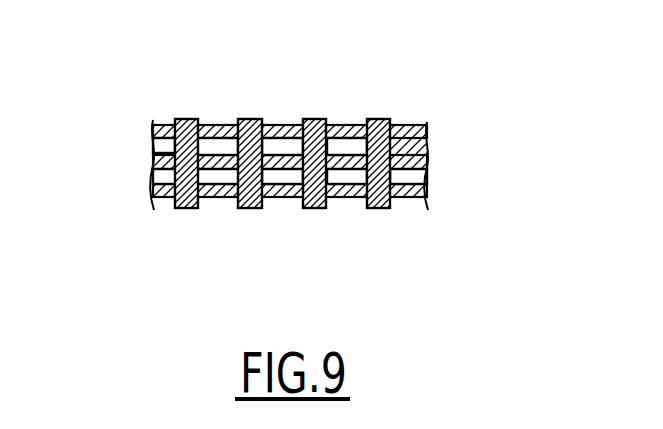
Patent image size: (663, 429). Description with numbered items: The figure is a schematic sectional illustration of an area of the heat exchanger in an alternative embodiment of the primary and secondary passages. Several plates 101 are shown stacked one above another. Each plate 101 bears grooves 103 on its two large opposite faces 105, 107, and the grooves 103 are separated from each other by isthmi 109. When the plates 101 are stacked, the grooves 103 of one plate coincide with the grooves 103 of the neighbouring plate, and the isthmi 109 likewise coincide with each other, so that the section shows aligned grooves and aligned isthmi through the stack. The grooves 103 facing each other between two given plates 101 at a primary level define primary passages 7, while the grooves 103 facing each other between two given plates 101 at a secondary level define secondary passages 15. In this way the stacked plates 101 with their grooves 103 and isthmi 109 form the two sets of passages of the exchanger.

The primary passage 7 is at (243, 147).
The secondary passage 15 is at (227, 202).
The plate 101 is at (428, 135).
The groove 103 is at (340, 141).
The large opposite face 105 is at (142, 148).
The large opposite face 107 is at (182, 106).
The isthmus 109 is at (420, 125).